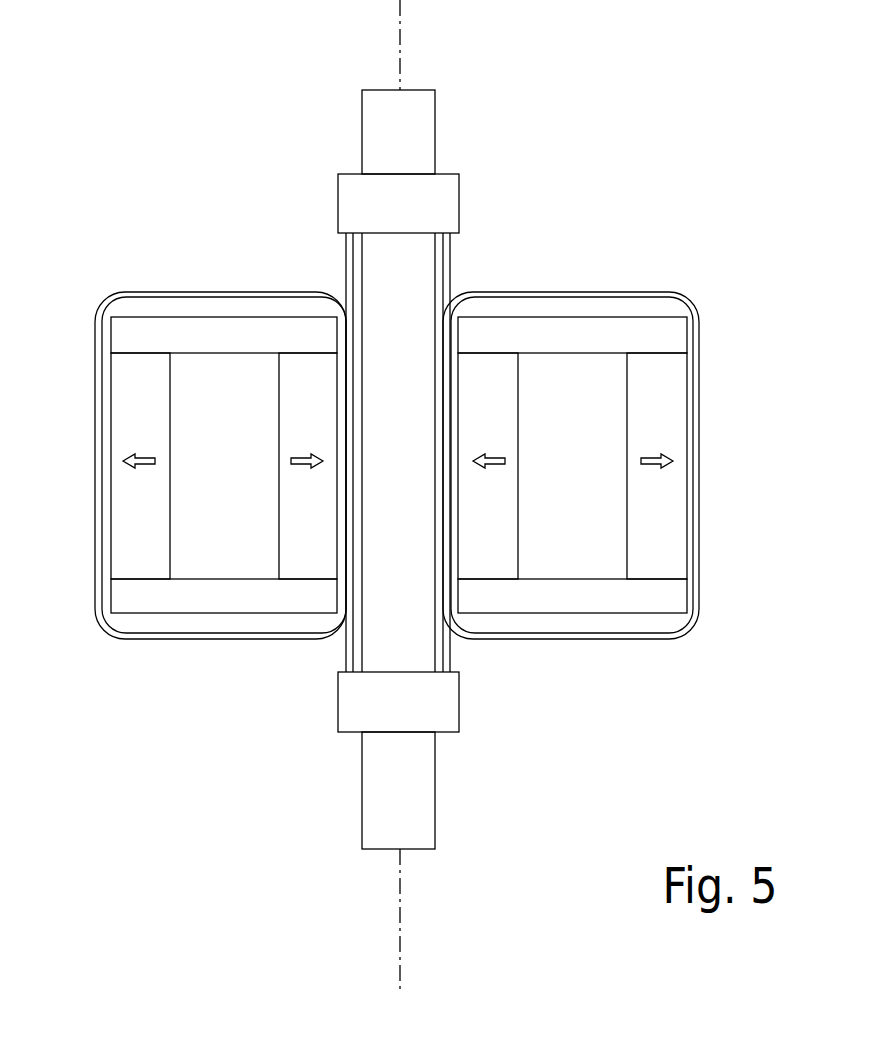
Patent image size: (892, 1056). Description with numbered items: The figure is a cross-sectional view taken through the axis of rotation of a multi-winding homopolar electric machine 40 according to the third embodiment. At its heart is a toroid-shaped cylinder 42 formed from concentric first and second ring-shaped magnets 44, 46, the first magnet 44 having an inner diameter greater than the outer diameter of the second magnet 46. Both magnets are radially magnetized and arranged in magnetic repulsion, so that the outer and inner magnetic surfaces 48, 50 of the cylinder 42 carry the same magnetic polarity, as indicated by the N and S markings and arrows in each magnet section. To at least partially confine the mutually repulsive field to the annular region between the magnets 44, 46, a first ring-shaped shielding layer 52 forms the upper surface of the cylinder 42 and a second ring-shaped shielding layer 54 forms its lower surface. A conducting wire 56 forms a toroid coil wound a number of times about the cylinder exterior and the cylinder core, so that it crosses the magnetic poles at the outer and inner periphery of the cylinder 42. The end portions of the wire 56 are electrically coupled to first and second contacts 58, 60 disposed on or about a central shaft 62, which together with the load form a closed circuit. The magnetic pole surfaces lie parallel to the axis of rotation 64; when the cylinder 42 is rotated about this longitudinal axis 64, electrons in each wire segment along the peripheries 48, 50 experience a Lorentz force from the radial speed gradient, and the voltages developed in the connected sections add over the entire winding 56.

The multi-winding homopolar electric machine 40 is at (690, 147).
The toroid-shaped cylinder 42 is at (727, 290).
The first ring-shaped magnet 44 is at (138, 385).
The second ring-shaped magnet 46 is at (310, 385).
The outer magnetic surface 48 is at (685, 555).
The inner magnetic surface 50 is at (455, 547).
The first ring-shaped shielding layer 52 is at (638, 338).
The second ring-shaped shielding layer 54 is at (650, 603).
The conducting wire 56 is at (173, 640).
The first contact 58 is at (450, 210).
The second contact 60 is at (440, 713).
The central shaft 62 is at (413, 127).
The axis of rotation 64 is at (400, 21).